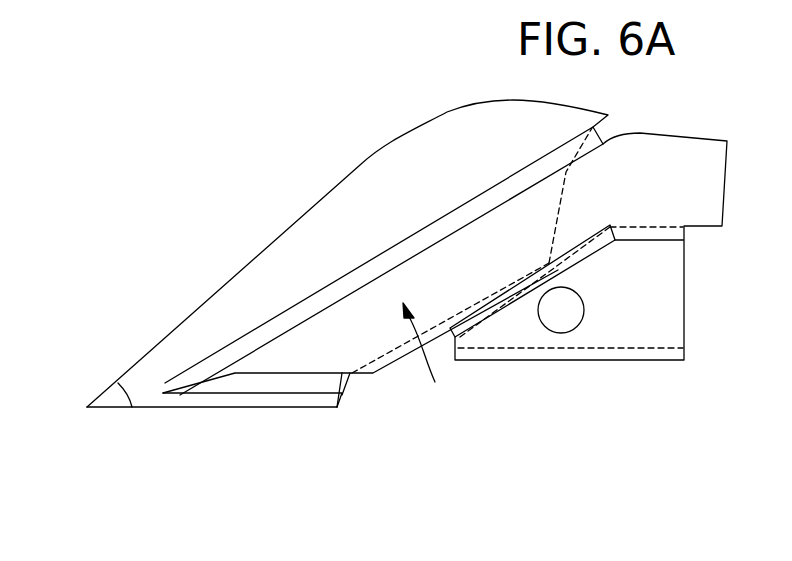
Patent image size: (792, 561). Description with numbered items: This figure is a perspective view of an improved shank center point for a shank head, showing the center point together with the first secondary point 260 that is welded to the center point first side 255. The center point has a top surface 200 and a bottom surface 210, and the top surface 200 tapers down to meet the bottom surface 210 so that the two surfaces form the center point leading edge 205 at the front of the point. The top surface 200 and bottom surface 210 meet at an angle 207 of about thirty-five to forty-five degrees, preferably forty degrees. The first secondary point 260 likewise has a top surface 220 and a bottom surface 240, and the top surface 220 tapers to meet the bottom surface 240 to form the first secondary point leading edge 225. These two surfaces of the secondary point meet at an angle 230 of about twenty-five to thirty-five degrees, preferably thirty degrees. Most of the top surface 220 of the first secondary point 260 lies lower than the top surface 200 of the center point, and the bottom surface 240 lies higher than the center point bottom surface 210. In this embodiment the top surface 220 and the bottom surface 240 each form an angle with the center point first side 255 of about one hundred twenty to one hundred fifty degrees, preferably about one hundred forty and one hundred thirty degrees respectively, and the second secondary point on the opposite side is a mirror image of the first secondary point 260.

The center point top surface 200 is at (163, 338).
The center point leading edge 205 is at (78, 388).
The angle between center point top and bottom surfaces 207 is at (128, 395).
The center point bottom surface 210 is at (115, 410).
The first secondary point top surface 220 is at (370, 278).
The first secondary point leading edge 225 is at (157, 394).
The angle between first secondary point top and bottom surfaces 230 is at (208, 393).
The first secondary point bottom surface 240 is at (287, 384).
The center point first side 255 is at (452, 137).
The first secondary point 260 is at (431, 354).